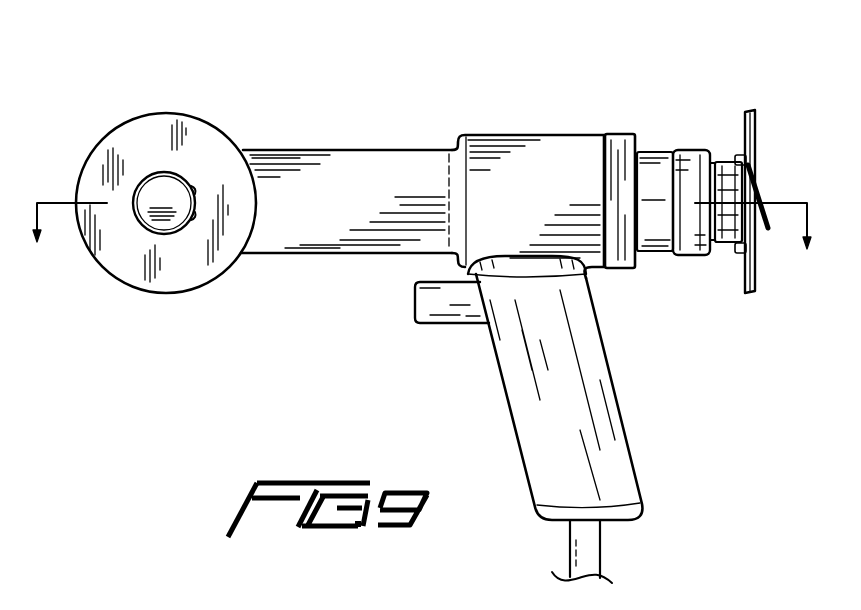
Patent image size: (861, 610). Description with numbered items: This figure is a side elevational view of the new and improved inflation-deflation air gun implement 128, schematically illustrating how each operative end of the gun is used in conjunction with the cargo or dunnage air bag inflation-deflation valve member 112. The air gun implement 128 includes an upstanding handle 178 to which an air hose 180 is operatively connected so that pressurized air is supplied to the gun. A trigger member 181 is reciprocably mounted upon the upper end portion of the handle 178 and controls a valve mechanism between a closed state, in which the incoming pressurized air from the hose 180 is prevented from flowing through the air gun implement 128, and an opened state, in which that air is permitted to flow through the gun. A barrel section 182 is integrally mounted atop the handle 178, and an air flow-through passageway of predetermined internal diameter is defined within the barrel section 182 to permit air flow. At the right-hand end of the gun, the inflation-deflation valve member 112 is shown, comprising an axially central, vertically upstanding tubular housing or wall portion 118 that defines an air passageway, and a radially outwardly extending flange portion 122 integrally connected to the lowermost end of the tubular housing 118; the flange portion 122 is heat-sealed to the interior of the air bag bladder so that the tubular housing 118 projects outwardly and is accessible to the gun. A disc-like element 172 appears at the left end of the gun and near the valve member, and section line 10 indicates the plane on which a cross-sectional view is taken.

The section line 10- 10 is at (426, 242).
The inflation-deflation valve member 112 is at (748, 113).
The tubular housing or wall portion 118 is at (723, 245).
The flange portion 122 is at (183, 273).
The air gun implement 128 is at (503, 132).
The lever 172 is at (163, 173).
The handle 178 is at (563, 385).
The air hose 180 is at (588, 550).
The trigger member 181 is at (437, 303).
The barrel section 182 is at (357, 148).